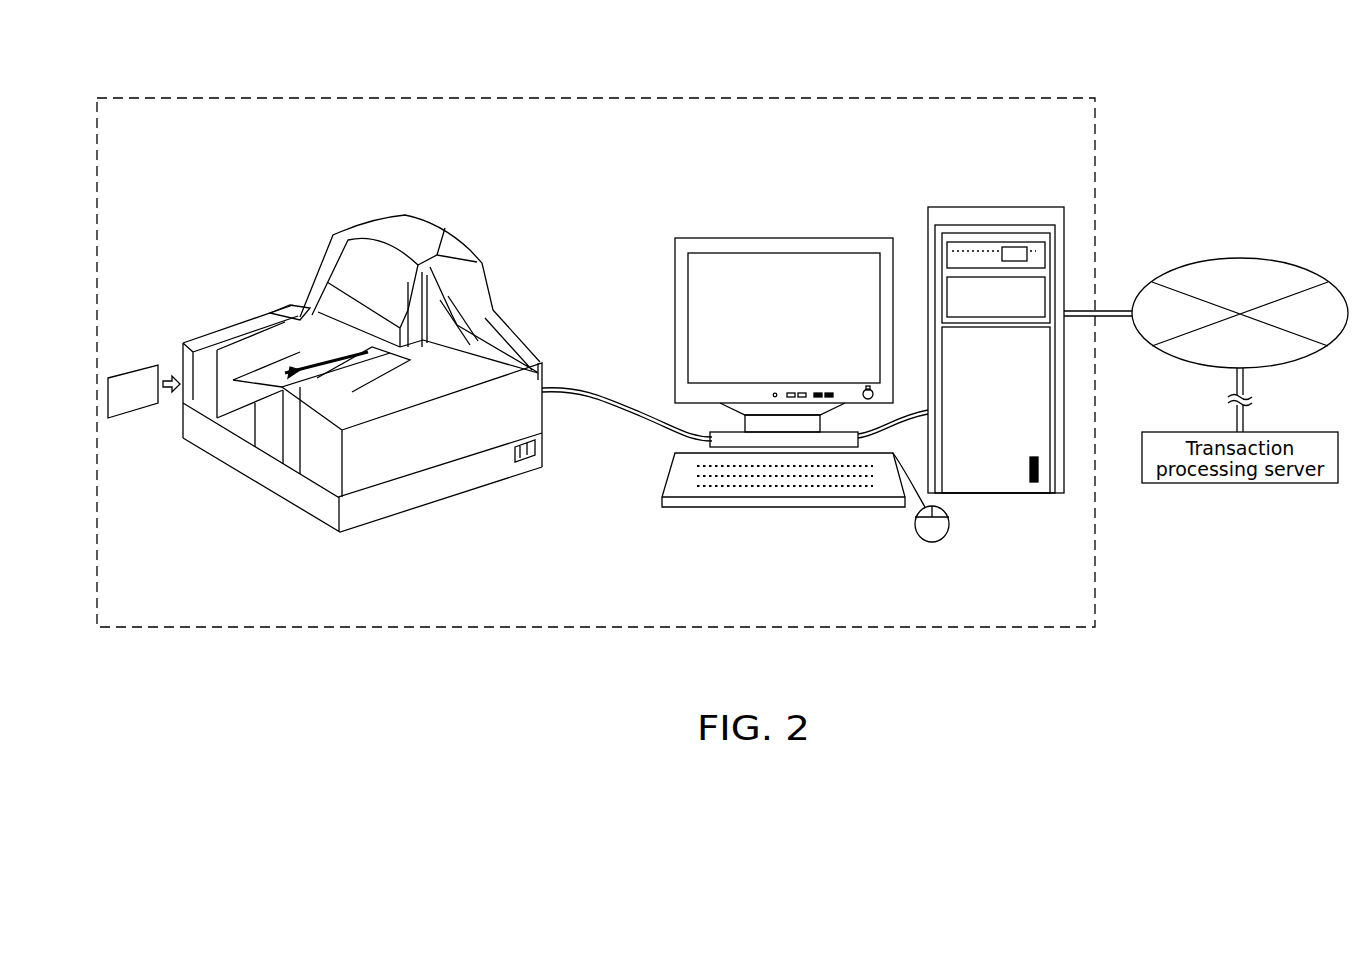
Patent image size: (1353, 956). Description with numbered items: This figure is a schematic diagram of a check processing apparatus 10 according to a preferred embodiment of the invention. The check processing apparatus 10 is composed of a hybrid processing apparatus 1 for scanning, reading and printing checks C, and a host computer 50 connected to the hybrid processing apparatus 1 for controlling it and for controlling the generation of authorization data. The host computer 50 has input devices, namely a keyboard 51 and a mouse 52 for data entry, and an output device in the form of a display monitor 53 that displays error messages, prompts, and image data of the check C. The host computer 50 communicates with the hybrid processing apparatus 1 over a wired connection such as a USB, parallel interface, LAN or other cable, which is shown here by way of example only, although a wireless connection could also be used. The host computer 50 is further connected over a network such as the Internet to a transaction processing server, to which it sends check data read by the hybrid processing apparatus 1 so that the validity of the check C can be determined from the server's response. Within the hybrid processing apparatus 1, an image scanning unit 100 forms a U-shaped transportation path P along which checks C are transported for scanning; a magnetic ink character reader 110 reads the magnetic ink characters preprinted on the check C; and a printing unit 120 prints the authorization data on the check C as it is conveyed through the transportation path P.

The check processing apparatus 10 is at (700, 98).
The hybrid processing apparatus 1 is at (356, 327).
The image scanning unit 100 is at (385, 241).
The magnetic ink character reader (MICR) 110 is at (406, 252).
The printing unit 120 is at (372, 372).
The transportation path P is at (233, 348).
The check C is at (133, 373).
The host computer 50 is at (837, 349).
The keyboard 51 is at (660, 480).
The mouse 52 is at (950, 527).
The display monitor 53 is at (735, 253).